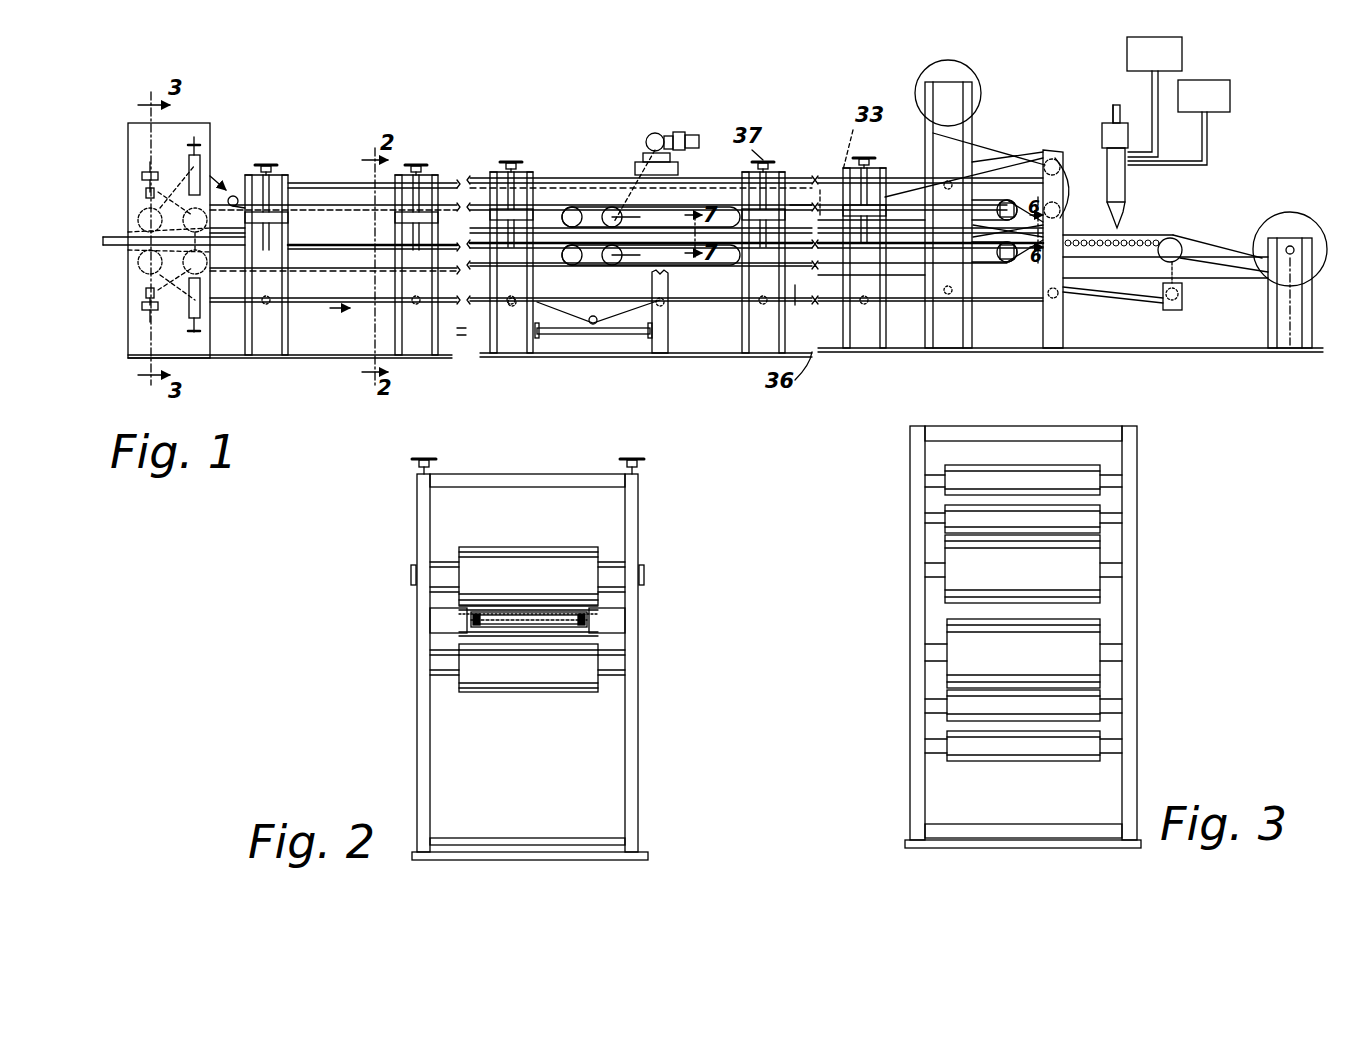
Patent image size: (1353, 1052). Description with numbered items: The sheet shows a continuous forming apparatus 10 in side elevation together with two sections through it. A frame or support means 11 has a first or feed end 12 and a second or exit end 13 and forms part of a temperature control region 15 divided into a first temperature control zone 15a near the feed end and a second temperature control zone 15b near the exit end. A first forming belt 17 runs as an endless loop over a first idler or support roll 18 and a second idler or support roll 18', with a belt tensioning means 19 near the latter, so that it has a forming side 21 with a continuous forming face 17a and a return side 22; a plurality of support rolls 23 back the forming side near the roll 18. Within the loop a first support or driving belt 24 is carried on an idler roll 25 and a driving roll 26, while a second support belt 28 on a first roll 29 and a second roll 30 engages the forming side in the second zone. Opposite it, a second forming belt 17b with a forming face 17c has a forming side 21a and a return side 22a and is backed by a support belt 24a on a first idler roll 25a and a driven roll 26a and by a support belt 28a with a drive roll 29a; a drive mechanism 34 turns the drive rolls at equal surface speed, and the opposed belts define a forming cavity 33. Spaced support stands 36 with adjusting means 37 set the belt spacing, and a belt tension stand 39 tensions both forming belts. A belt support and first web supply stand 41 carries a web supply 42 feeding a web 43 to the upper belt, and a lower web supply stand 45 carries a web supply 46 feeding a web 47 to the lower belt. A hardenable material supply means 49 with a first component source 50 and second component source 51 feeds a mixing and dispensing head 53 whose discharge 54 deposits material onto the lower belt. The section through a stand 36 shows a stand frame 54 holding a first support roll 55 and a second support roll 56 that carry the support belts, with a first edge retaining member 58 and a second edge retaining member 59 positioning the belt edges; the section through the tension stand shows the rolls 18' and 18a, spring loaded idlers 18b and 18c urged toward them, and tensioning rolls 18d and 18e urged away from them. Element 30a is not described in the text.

In FIG. 1, the apparatus 10 is at (225, 58).
In FIG. 1, the belt tension stand 39 is at (130, 135).
In FIG. 3, the belt tension stand 39 is at (1183, 612).
In FIG. 1, the frame or support means 11 is at (330, 183).
In FIG. 1, the second or exit end 13 is at (315, 180).
In FIG. 1, the first or feed end 12 is at (1052, 150).
In FIG. 1, the temperature control region or zone 15 is at (822, 190).
In FIG. 1, the first temperature control region or zone 15a is at (811, 309).
In FIG. 1, the second temperature control region or zone 15b is at (445, 262).
In FIG. 1, the first forming belt 17 is at (1118, 300).
In FIG. 2, the first forming belt 17 is at (472, 626).
In FIG. 1, the continuous forming face 17a is at (1165, 235).
In FIG. 1, the second forming belt 17b is at (603, 205).
In FIG. 2, the second forming belt 17b is at (492, 610).
In FIG. 1, the continuous forming face 17c is at (1065, 215).
In FIG. 1, the first idler or support roll 18 is at (1196, 274).
In FIG. 3, the first idler or support roll 18 is at (983, 653).
In FIG. 1, the second idler or support roll 18' is at (144, 265).
In FIG. 1, the roll 18a is at (140, 218).
In FIG. 3, the roll 18a is at (1092, 556).
In FIG. 1, the first spring loaded idler 18b is at (145, 292).
In FIG. 3, the first spring loaded idler 18b is at (1085, 707).
In FIG. 1, the spring loaded idler 18c is at (148, 185).
In FIG. 3, the spring loaded idler 18c is at (958, 514).
In FIG. 1, the tensioning roll 18d is at (205, 300).
In FIG. 3, the tensioning roll 18d is at (970, 748).
In FIG. 1, the tensioning roll 18e is at (207, 190).
In FIG. 3, the tensioning roll 18e is at (1085, 470).
In FIG. 1, the belt tensioning means 19 is at (138, 307).
In FIG. 1, the forming side 21 is at (1020, 252).
In FIG. 1, the forming side 21a is at (735, 215).
In FIG. 1, the return side 22 is at (700, 300).
In FIG. 1, the return side 22a is at (795, 205).
In FIG. 1, the support rolls 23 is at (1085, 246).
In FIG. 1, the first support or driving belt 24 is at (925, 268).
In FIG. 1, the support belt 24a is at (920, 215).
In FIG. 1, the idler roll 25 is at (1010, 262).
In FIG. 1, the first idler roll 25a is at (1007, 200).
In FIG. 1, the driving roll 26 is at (634, 255).
In FIG. 1, the driven roll 26a is at (641, 217).
In FIG. 1, the second support belt 28 is at (325, 268).
In FIG. 2, the second support belt 28 is at (620, 636).
In FIG. 1, the support belt 28a is at (548, 188).
In FIG. 2, the support belt 28a is at (620, 612).
In FIG. 1, the first roll 29 is at (575, 265).
In FIG. 1, the drive roll 29a is at (581, 201).
In FIG. 1, the second roll 30 is at (212, 258).
In FIG. 1, the guide roller 30a is at (240, 173).
In FIG. 1, the forming cavity 33 is at (848, 150).
In FIG. 2, the forming cavity 33 is at (552, 620).
In FIG. 1, the drive mechanism 34 is at (648, 145).
In FIG. 1, the support stands 36 is at (268, 350).
In FIG. 2, the support stands 36 is at (700, 790).
In FIG. 1, the adjusting means 37 is at (420, 163).
In FIG. 2, the adjusting means 37 is at (415, 459).
In FIG. 1, the belt support and first web supply stand 41 is at (930, 95).
In FIG. 1, the web supply 42 is at (935, 62).
In FIG. 1, the web 43 is at (990, 145).
In FIG. 1, the second or lower web supply stand 45 is at (1292, 330).
In FIG. 1, the web supply 46 is at (1292, 212).
In FIG. 1, the web 47 is at (1208, 245).
In FIG. 1, the hardenable material supply means 49 is at (1124, 100).
In FIG. 1, the first component source 50 is at (1133, 45).
In FIG. 1, the second component source 51 is at (1215, 92).
In FIG. 1, the mixing and dispensing head 53 is at (1108, 175).
In FIG. 1, the discharge 54 is at (1118, 228).
In FIG. 2, the discharge 54 is at (417, 786).
In FIG. 2, the first support roll 55 is at (440, 675).
In FIG. 2, the second support roll 56 is at (442, 566).
In FIG. 2, the first edge retaining member 58 is at (445, 625).
In FIG. 2, the second edge retaining member 59 is at (612, 622).